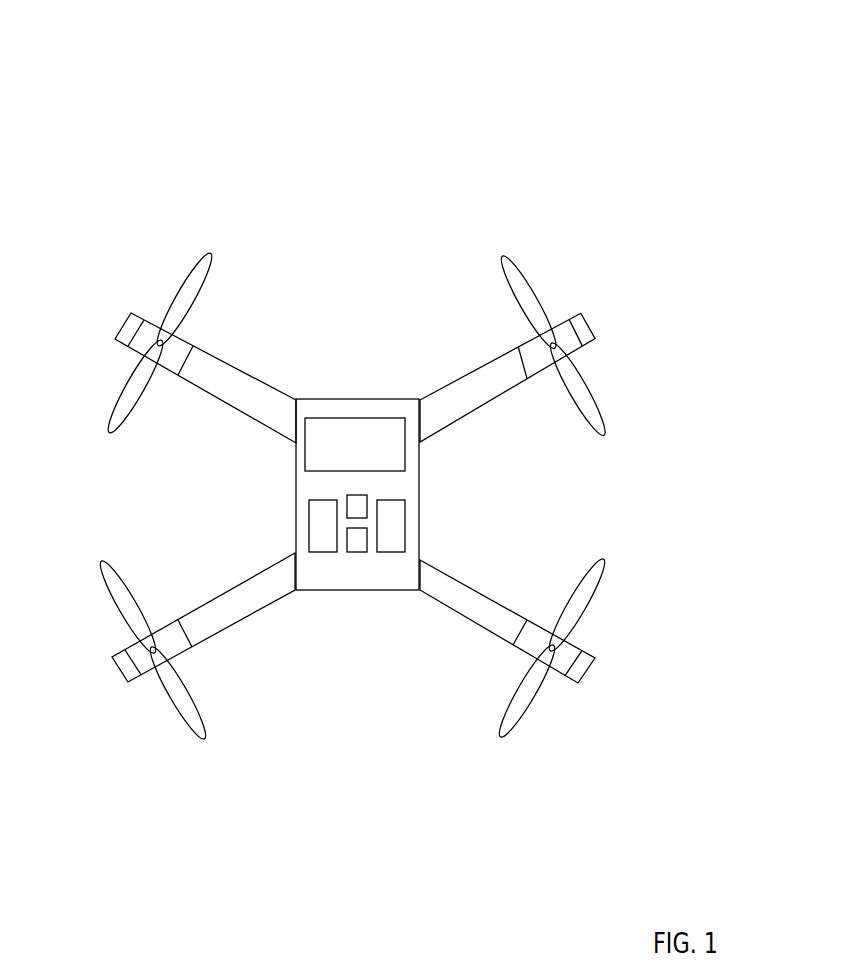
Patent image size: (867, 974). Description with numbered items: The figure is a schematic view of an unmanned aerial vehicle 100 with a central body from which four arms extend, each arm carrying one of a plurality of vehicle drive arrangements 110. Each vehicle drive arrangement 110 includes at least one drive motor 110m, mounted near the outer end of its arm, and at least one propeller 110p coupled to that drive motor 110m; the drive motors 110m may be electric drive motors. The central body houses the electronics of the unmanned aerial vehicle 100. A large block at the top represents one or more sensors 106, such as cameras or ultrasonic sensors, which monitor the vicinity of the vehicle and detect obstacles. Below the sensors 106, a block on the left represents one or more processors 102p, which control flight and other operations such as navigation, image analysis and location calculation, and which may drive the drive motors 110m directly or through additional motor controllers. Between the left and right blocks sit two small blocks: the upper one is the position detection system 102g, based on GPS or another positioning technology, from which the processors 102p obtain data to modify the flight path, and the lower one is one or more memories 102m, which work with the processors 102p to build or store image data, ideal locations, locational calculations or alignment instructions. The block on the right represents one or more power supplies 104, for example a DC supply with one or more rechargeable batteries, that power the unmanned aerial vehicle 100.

The unmanned aerial vehicle 100 is at (520, 127).
The processors 102p is at (323, 524).
The position detection system 102g is at (358, 505).
The memories 102m is at (357, 552).
The power supplies 104 is at (390, 525).
The sensors 106 is at (354, 445).
The vehicle drive arrangements 110 is at (433, 496).
The drive motor 110m is at (577, 317).
The propeller 110p is at (597, 417).